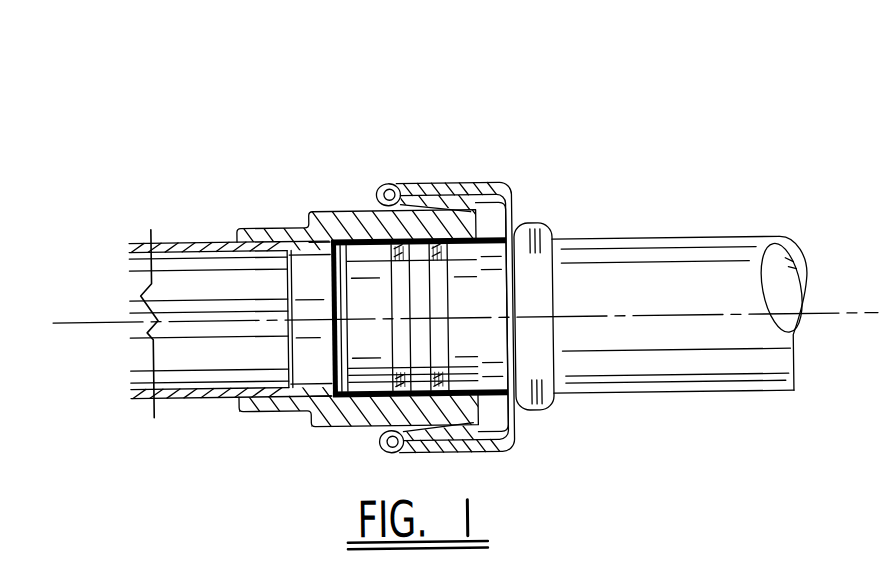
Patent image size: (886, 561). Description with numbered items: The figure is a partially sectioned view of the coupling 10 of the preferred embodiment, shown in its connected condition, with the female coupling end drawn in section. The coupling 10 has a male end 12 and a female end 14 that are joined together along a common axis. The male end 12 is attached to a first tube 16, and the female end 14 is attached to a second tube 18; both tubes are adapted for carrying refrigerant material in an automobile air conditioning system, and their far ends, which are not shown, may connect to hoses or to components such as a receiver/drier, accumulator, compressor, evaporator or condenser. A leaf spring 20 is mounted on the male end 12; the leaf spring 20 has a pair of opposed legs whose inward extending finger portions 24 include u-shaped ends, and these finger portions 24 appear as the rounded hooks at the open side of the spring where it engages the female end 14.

The coupling 10 is at (447, 65).
The male end 12 is at (503, 237).
The female end 14 is at (326, 210).
The first tube 16 is at (647, 241).
The second tube 18 is at (197, 386).
The leaf spring 20 is at (437, 182).
The finger portions 24 is at (377, 183).